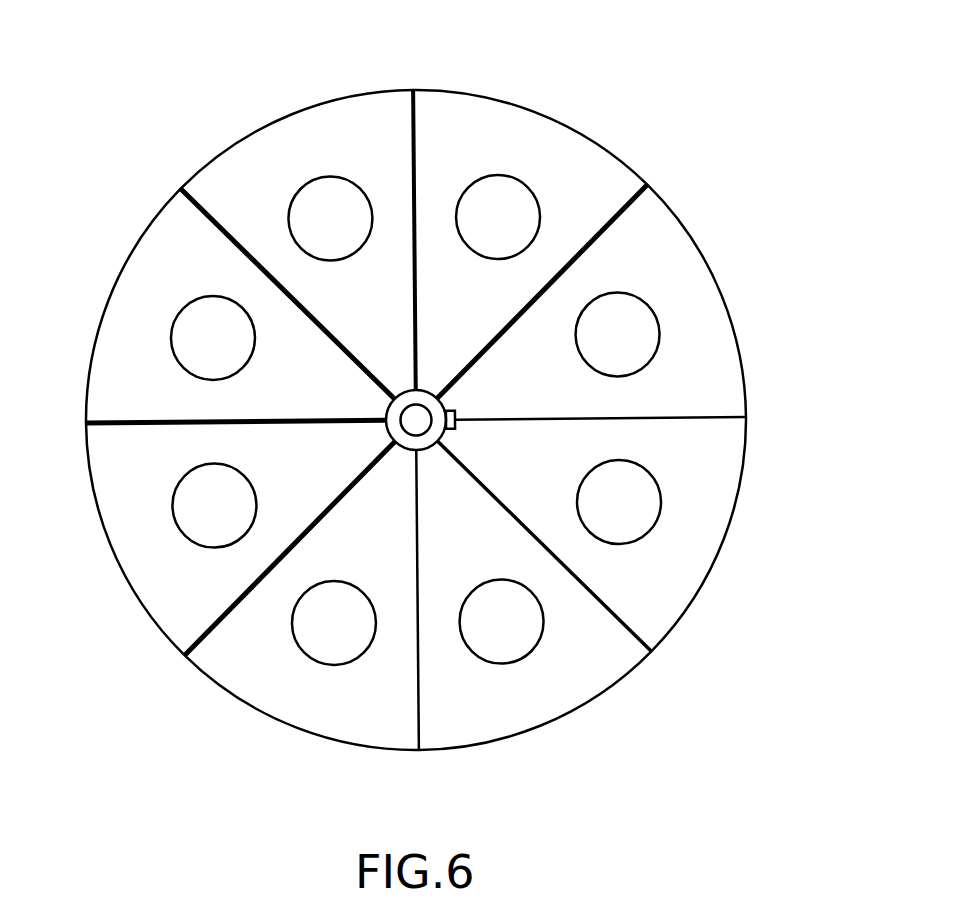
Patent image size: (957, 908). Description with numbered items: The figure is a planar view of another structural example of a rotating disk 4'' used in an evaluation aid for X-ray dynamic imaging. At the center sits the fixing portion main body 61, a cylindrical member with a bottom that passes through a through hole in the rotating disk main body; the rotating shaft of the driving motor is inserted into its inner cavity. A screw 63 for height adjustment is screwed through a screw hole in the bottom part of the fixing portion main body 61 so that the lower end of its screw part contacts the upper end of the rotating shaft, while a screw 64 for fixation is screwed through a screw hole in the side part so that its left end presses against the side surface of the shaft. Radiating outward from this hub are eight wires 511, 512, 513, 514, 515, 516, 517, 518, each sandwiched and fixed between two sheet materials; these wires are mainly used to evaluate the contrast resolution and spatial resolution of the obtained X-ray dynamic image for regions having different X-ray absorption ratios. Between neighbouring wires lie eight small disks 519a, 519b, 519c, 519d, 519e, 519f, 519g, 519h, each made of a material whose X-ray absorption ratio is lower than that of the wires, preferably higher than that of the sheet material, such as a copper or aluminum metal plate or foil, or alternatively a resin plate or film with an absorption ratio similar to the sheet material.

The rotating disk 4'' is at (416, 392).
The fixing portion main body 61 is at (405, 440).
The screw for height adjustment 63 is at (415, 418).
The screw for fixation 64 is at (455, 410).
The wire 511 is at (717, 417).
The wire 512 is at (630, 622).
The wire 513 is at (422, 718).
The wire 514 is at (208, 633).
The wire 515 is at (127, 423).
The wire 516 is at (207, 220).
The wire 517 is at (410, 128).
The wire 518 is at (627, 215).
The small disk 519a is at (640, 507).
The small disk 519b is at (517, 635).
The small disk 519c is at (330, 643).
The small disk 519d is at (195, 517).
The small disk 519e is at (190, 335).
The small disk 519f is at (325, 208).
The small disk 519g is at (508, 190).
The small disk 519h is at (635, 327).